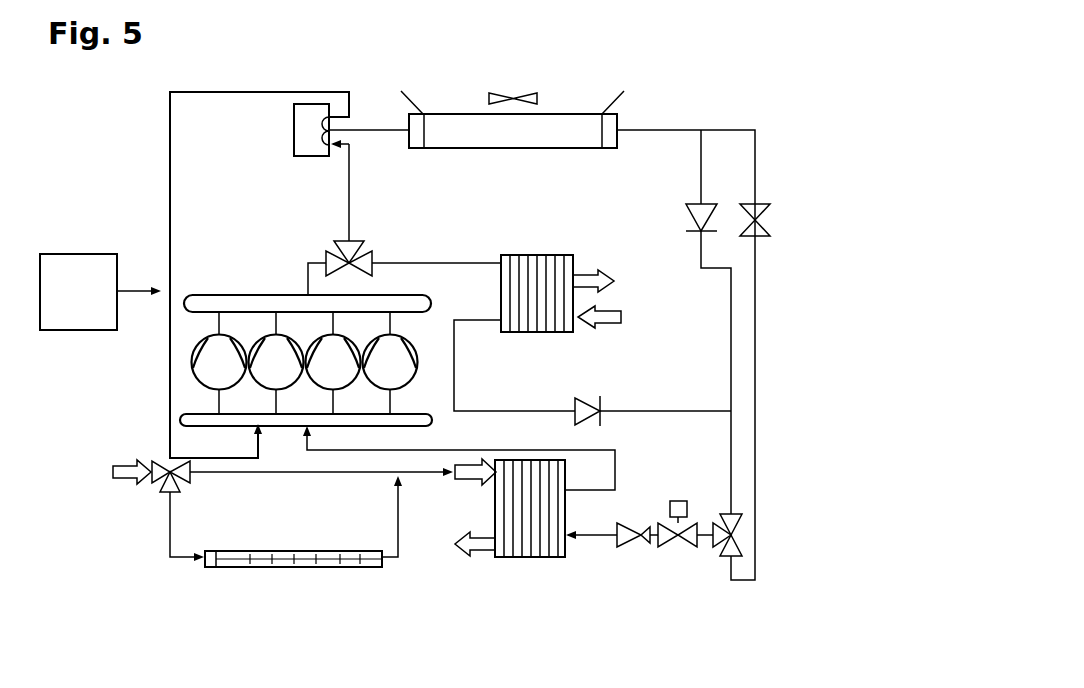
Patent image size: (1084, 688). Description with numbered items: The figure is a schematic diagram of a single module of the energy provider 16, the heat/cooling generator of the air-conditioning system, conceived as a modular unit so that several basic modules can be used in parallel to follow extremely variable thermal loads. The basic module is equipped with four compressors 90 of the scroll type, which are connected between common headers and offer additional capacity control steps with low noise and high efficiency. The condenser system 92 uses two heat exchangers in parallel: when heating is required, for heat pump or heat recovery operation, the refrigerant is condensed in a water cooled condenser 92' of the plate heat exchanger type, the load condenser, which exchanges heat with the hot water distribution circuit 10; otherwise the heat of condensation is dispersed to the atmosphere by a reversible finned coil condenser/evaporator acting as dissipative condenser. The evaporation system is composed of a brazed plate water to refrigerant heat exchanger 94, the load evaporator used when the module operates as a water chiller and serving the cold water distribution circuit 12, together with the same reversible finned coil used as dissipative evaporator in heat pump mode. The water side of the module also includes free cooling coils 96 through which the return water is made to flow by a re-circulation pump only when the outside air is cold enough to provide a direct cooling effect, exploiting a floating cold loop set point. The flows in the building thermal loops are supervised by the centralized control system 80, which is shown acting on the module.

The hot water distribution circuit 10 is at (618, 296).
The cold water distribution circuit 12 is at (126, 490).
The energy provider 16 is at (696, 106).
The centralized control system 80 is at (75, 250).
The compressors 90 is at (378, 386).
The condenser system 92 is at (512, 122).
The water cooled condenser 92' is at (547, 318).
The brazed plate water to refrigerant heat exchanger 94 is at (565, 508).
The free cooling coils 96 is at (260, 570).